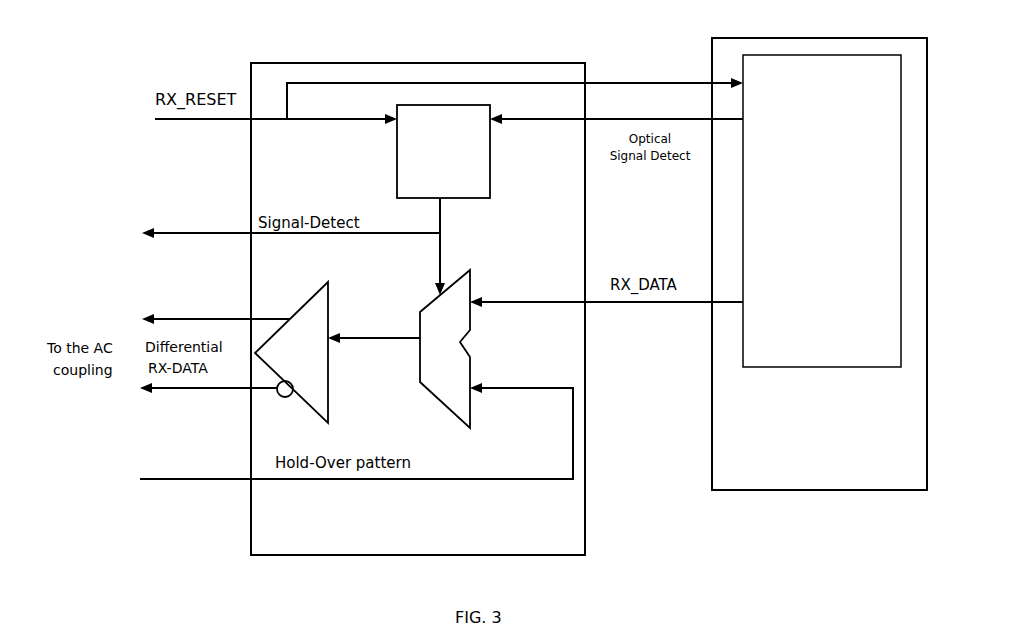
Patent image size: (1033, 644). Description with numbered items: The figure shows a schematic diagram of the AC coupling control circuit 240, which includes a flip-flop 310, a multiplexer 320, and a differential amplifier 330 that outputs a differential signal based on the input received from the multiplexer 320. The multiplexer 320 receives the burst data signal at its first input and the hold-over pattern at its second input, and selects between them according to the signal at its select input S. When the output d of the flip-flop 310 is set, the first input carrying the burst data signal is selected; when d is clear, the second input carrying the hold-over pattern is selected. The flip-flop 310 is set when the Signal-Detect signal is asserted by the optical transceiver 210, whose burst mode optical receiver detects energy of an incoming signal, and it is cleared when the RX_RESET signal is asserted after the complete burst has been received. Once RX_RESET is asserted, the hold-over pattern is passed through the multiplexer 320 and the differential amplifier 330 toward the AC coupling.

The optical transceiver 210 is at (819, 264).
The AC coupling control circuit 240 is at (453, 62).
The flip-flop 310 is at (443, 151).
The multiplexer 320 is at (457, 349).
The differential amplifier 330 is at (291, 352).